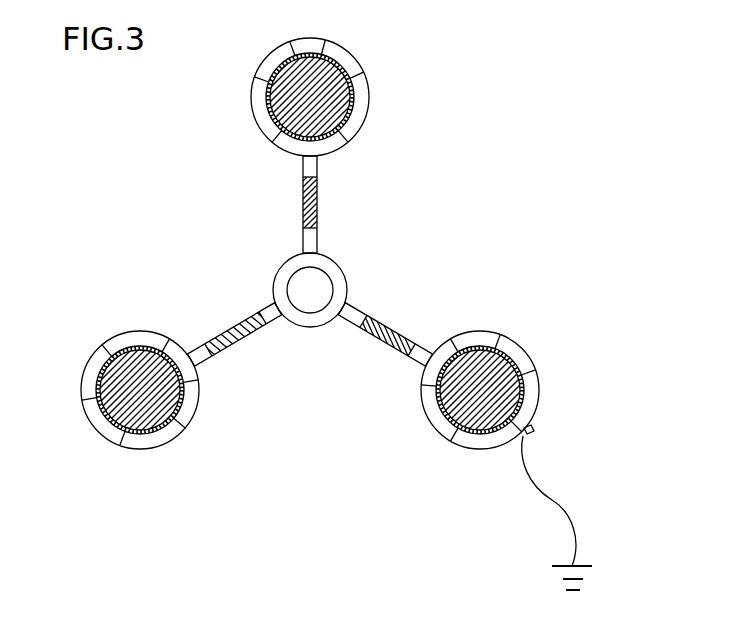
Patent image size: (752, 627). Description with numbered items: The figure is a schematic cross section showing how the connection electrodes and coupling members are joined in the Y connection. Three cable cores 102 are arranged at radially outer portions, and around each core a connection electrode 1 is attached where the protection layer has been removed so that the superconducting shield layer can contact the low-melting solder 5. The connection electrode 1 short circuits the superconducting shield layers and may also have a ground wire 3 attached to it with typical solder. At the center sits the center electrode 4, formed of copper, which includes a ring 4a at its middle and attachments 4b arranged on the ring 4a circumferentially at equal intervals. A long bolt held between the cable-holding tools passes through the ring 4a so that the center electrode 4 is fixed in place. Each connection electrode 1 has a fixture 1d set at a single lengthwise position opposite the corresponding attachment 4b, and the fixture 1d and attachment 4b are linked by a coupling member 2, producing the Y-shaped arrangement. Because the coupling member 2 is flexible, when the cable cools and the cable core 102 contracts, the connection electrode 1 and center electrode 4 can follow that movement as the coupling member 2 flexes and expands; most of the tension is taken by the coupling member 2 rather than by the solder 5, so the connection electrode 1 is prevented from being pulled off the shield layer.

The connection electrode 1 is at (252, 90).
The fixture 1d is at (303, 157).
The coupling member 2 is at (318, 211).
The ground wire 3 is at (548, 497).
The center electrode 4 is at (282, 262).
The ring 4a is at (337, 272).
The attachment 4b is at (318, 245).
The low-melting solder 5 is at (352, 124).
The cable core 102 is at (333, 92).